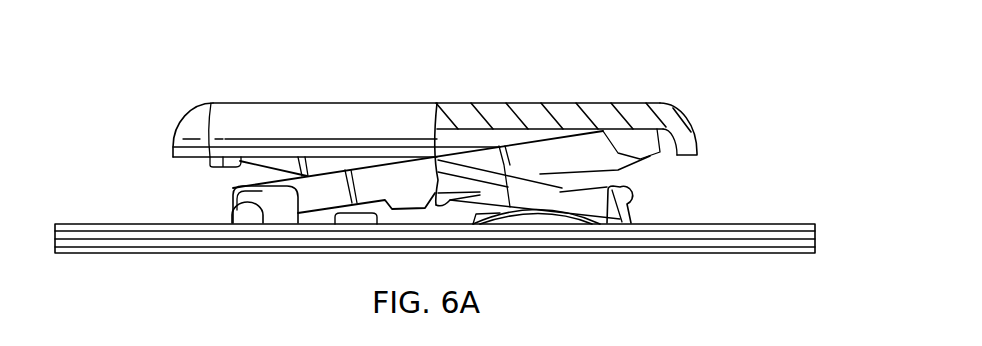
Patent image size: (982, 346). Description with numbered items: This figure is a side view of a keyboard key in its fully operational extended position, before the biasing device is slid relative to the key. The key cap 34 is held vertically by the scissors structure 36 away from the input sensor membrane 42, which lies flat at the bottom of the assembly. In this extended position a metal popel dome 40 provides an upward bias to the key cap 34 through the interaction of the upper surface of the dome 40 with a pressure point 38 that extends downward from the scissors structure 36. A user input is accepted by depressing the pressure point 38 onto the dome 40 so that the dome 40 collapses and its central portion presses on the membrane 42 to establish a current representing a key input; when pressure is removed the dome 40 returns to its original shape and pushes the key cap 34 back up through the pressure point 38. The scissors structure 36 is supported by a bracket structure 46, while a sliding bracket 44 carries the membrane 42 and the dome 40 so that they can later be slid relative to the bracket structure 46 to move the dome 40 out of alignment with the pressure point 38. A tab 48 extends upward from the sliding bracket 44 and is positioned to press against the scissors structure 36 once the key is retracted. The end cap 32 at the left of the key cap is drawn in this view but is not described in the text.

The cover end cap 32 is at (175, 140).
The key cap 34 is at (310, 110).
The scissors structure 36 is at (643, 170).
The pressure point 38 is at (620, 222).
The metal popel dome 40 is at (555, 217).
The input sensor membrane 42 is at (100, 227).
The sliding bracket 44 is at (257, 237).
The bracket structure 46 is at (115, 248).
The tab 48 is at (353, 218).